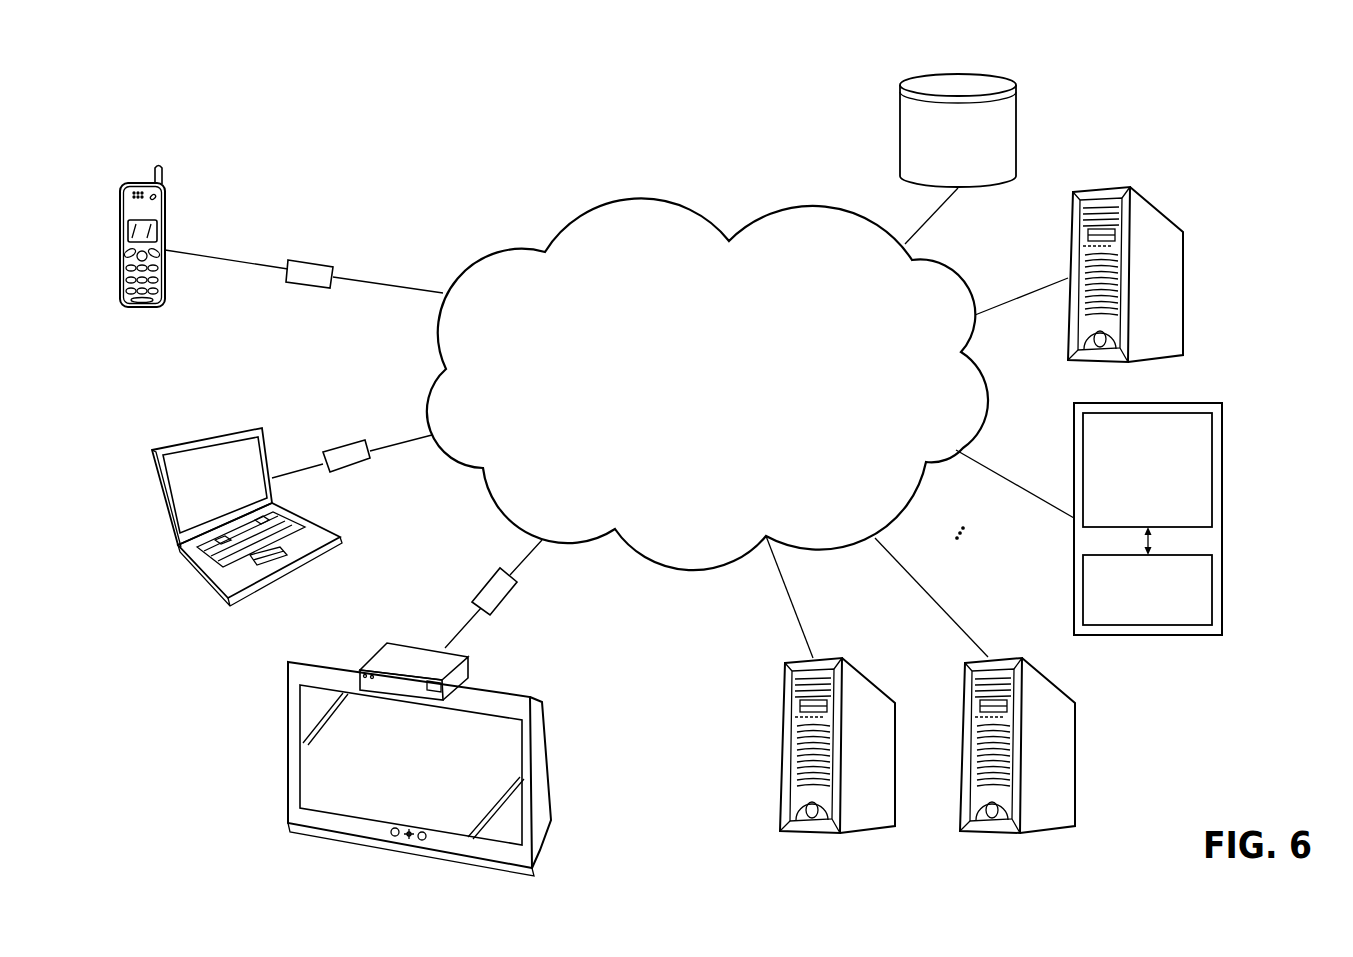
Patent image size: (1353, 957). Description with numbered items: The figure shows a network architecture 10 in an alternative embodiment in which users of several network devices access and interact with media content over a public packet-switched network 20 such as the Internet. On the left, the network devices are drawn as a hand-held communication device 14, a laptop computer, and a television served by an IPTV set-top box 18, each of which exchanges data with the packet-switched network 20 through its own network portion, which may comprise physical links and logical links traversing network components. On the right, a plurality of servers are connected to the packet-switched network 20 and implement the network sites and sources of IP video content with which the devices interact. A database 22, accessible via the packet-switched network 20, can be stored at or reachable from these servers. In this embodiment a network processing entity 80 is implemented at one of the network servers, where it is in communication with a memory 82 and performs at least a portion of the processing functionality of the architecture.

The architecture 10 is at (452, 98).
The hand-held communication device 14 is at (165, 228).
The IPTV set-top box 18 is at (555, 739).
The packet-switched network 20 is at (694, 401).
The database 22 is at (947, 174).
The network processing entity 80 is at (1136, 517).
The memory 82 is at (1147, 590).